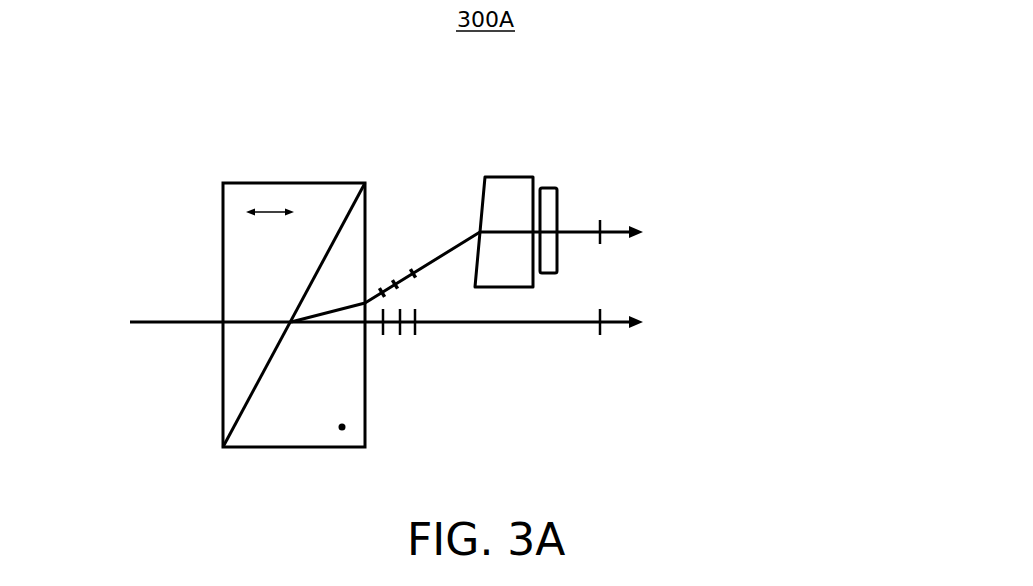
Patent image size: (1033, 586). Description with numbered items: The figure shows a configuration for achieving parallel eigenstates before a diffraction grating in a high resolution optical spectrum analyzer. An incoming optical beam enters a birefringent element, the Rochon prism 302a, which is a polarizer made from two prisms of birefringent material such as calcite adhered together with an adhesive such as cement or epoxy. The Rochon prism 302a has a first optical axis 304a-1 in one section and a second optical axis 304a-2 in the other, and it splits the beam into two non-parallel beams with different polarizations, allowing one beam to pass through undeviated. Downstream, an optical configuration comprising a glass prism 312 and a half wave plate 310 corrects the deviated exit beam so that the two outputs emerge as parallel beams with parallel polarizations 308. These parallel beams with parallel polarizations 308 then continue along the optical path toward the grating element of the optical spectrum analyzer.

The Rochon prism 302a is at (279, 170).
The first optical axis 304a-1 is at (238, 230).
The second optical axis 304a-2 is at (360, 432).
The glass prism 312 is at (494, 167).
The half wave plate 310 is at (567, 188).
The parallel beams with parallel polarizations 308 is at (642, 252).